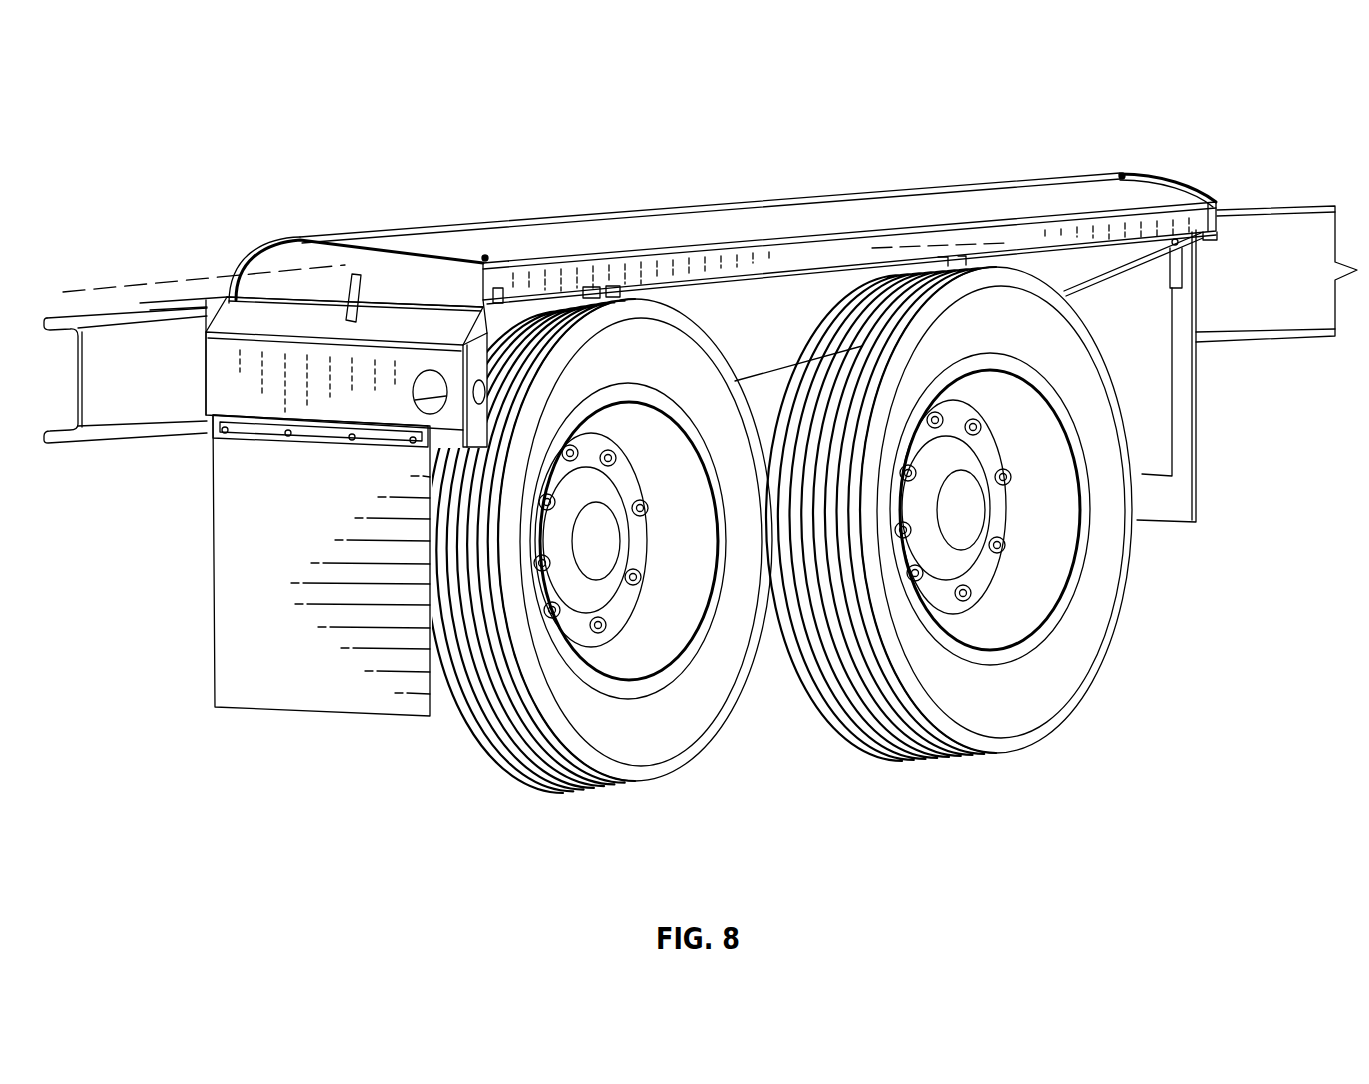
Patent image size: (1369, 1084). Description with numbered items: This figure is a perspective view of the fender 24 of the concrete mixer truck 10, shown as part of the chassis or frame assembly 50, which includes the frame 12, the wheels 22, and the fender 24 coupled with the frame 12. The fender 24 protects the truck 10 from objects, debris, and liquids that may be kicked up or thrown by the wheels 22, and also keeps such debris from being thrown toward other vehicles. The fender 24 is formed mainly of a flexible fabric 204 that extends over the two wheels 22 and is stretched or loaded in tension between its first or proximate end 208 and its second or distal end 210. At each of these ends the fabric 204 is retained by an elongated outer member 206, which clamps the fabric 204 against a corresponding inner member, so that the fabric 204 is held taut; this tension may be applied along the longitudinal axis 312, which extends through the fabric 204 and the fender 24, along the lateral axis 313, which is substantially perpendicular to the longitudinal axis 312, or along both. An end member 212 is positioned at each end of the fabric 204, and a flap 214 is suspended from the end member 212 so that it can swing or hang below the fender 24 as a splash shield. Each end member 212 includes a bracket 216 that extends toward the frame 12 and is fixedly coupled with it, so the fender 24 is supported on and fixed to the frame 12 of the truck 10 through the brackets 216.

The concrete mixer truck 10 is at (130, 260).
The frame 12 is at (100, 442).
The wheels 22 is at (712, 693).
The fender 24 is at (628, 130).
The frame assembly 50 is at (462, 88).
The fabric 204 is at (812, 212).
The outer member 206 is at (440, 246).
The proximate end 208 is at (226, 262).
The distal end 210 is at (1226, 204).
The end member 212 is at (216, 378).
The flap 214 is at (213, 618).
The bracket 216 is at (163, 438).
The longitudinal axis 312 is at (88, 290).
The lateral axis 313 is at (920, 246).